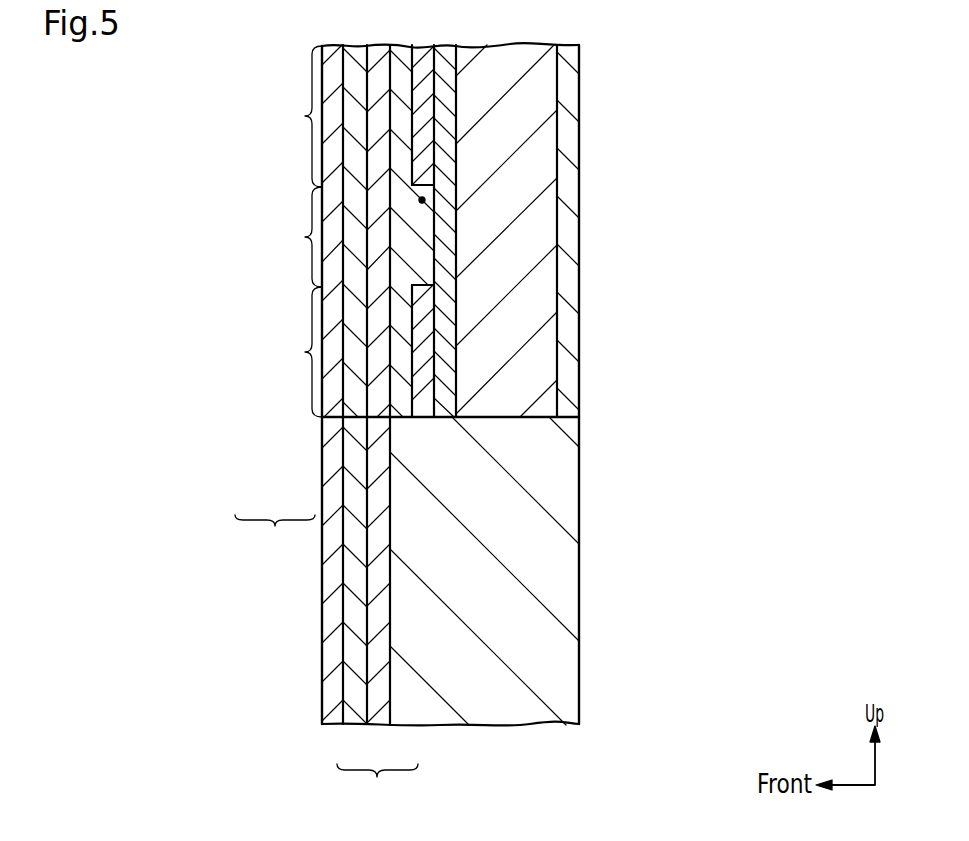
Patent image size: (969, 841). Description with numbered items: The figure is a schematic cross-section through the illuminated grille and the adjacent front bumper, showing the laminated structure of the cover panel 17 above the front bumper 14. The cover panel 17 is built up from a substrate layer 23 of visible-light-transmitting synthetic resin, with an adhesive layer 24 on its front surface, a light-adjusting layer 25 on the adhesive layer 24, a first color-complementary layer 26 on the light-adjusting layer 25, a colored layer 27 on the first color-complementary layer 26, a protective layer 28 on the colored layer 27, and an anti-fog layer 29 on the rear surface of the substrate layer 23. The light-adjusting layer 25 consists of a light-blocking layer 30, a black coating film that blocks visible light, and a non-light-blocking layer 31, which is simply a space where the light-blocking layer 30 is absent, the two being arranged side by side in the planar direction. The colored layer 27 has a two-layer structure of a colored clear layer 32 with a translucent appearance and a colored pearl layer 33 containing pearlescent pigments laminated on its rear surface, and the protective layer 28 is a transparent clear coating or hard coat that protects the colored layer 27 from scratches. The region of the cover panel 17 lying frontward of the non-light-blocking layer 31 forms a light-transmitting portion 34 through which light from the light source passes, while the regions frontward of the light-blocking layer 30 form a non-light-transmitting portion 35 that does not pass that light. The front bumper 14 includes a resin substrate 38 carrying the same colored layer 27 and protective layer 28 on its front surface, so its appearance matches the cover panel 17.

The front bumper 14 is at (590, 495).
The cover panel 17 is at (587, 82).
The substrate layer 23 is at (505, 416).
The adhesive layer 24 is at (444, 412).
The light-adjusting layer 25 is at (429, 430).
The first color-complementary layer 26 is at (403, 416).
The colored layer 27 is at (326, 664).
The protective layer 28 is at (333, 416).
The anti-fog layer 29 is at (566, 414).
The light-blocking layer 30 is at (420, 56).
The non-light-blocking layer 31 is at (423, 200).
The colored clear layer 32 is at (352, 416).
The colored pearl layer 33 is at (377, 416).
The light-transmitting portion 34 is at (297, 237).
The non-light-transmitting portion 35 is at (297, 231).
The resin substrate 38 is at (517, 716).